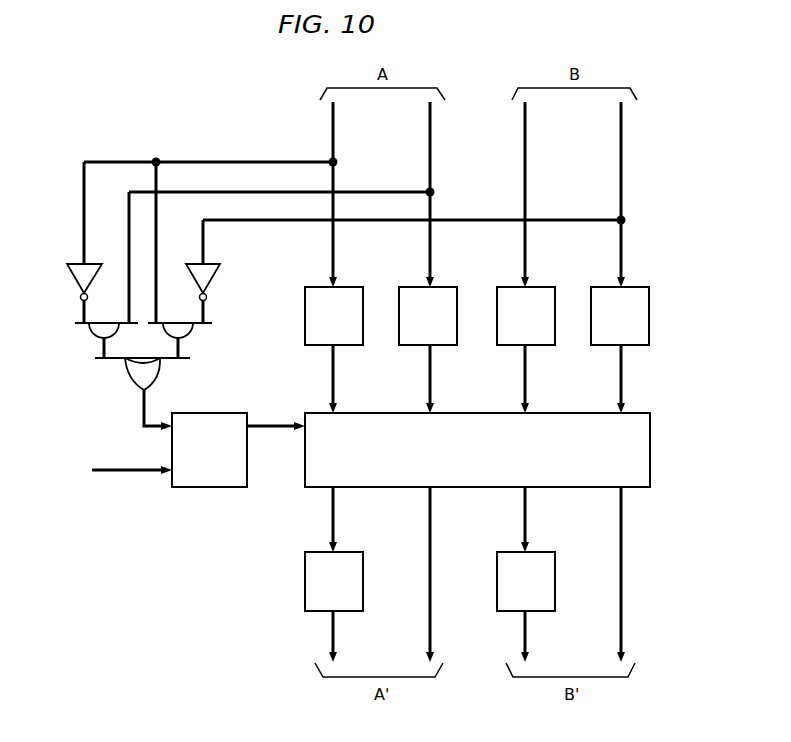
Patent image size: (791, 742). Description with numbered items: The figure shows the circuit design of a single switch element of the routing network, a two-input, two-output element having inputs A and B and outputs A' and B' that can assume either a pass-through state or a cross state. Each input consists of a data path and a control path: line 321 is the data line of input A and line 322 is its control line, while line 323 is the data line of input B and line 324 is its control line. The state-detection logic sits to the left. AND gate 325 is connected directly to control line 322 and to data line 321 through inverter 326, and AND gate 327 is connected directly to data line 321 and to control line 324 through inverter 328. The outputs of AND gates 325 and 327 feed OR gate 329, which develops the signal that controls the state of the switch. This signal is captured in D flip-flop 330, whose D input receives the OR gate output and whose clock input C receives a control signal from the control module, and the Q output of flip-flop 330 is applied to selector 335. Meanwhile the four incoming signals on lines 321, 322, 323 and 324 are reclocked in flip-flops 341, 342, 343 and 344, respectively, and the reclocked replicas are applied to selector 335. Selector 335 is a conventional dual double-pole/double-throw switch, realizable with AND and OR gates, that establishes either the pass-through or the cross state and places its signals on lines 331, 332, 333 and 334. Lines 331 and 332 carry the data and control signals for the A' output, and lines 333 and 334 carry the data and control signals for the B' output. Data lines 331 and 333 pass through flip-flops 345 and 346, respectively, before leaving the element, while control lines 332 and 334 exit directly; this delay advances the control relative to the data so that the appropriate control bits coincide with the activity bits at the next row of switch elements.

The data line of input A 321 is at (337, 121).
The control line of input A 322 is at (434, 121).
The data line of input B 323 is at (529, 121).
The control line of input B 324 is at (625, 121).
The AND gate 325 is at (101, 340).
The inverter 326 is at (74, 293).
The AND gate 327 is at (184, 340).
The inverter 328 is at (215, 293).
The OR gate 329 is at (142, 394).
The D flip-flop 330 is at (222, 413).
The data line of output A' 331 is at (337, 509).
The control line of output A' 332 is at (434, 509).
The data line of output B' 333 is at (529, 509).
The control line of output B' 334 is at (625, 509).
The selector 335 is at (638, 413).
The flip-flop 341 is at (345, 288).
The flip-flop 342 is at (440, 288).
The flip-flop 343 is at (538, 288).
The flip-flop 344 is at (632, 288).
The flip-flop 345 is at (348, 553).
The flip-flop 346 is at (540, 553).